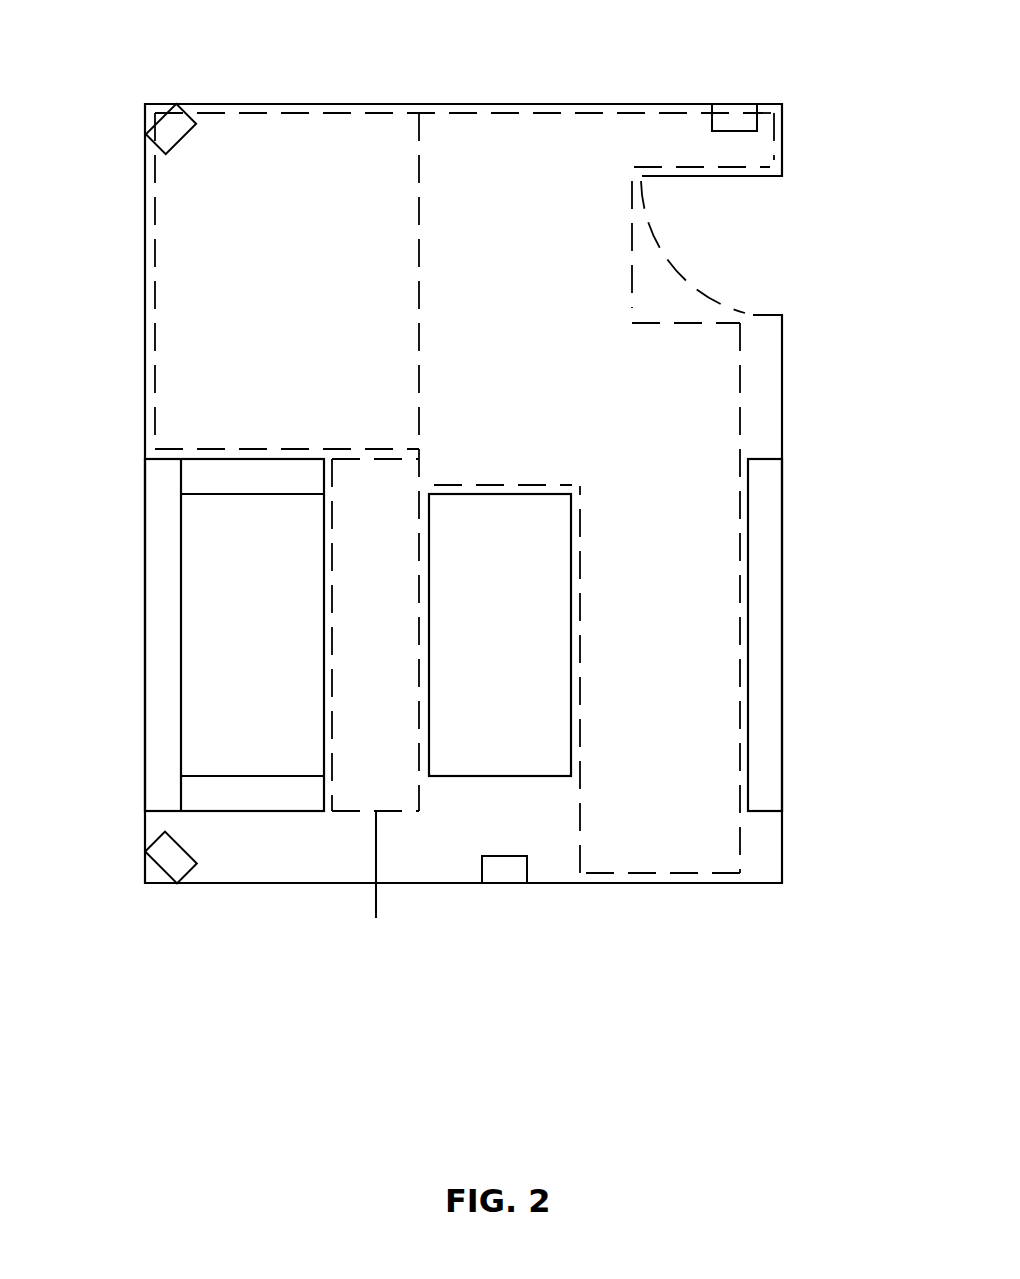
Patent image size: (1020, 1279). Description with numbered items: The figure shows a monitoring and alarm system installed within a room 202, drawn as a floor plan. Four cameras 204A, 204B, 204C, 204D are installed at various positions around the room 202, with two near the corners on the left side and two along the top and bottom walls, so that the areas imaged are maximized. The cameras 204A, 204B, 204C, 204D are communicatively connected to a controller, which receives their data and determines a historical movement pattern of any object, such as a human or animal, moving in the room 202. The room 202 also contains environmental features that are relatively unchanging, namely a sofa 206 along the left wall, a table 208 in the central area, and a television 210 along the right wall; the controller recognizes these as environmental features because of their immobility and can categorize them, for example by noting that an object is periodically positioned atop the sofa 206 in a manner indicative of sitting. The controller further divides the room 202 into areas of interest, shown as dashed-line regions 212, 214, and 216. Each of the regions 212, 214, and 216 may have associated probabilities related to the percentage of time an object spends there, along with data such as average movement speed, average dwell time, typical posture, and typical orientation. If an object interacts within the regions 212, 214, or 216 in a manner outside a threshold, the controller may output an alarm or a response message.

The room 202 is at (404, 890).
The camera 204A is at (143, 137).
The camera 204B is at (161, 872).
The camera 204C is at (506, 888).
The camera 204D is at (734, 103).
The sofa 206 is at (163, 644).
The table 208 is at (500, 635).
The television 210 is at (783, 653).
The region 212 is at (261, 114).
The region 214 is at (618, 114).
The region 216 is at (380, 883).